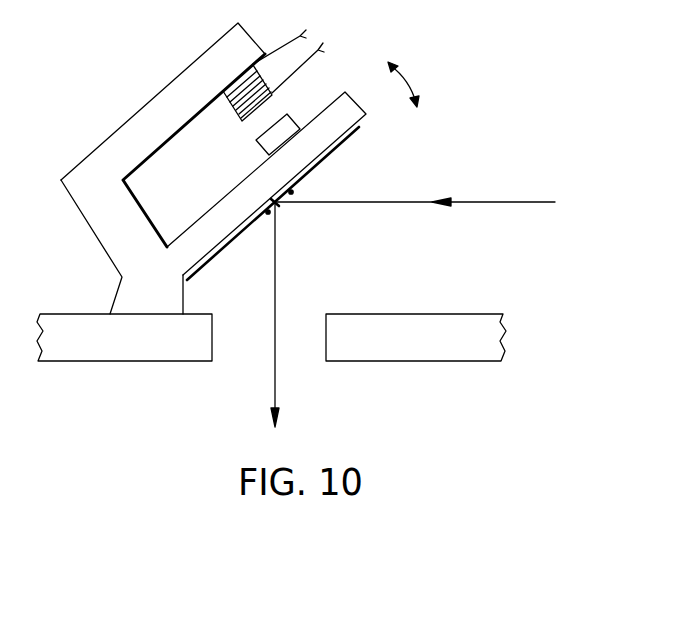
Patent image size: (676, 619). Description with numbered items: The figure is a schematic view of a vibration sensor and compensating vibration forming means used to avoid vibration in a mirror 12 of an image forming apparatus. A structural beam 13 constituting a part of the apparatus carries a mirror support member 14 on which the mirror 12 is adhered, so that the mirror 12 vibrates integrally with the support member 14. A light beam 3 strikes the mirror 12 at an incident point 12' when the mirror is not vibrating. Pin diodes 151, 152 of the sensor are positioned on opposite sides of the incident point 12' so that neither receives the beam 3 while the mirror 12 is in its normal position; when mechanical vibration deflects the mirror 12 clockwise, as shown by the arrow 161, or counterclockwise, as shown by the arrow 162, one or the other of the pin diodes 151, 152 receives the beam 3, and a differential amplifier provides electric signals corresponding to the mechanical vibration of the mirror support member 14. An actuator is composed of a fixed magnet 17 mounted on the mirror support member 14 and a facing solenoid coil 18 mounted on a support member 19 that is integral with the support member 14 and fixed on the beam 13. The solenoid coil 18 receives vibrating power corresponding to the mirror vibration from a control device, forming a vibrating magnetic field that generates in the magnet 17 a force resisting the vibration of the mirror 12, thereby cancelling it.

The support member 19 is at (155, 105).
The solenoid coil 18 is at (232, 100).
The fixed magnet 17 is at (294, 127).
The mirror support member 14 is at (218, 212).
The mirror 12 is at (292, 203).
The incident point 12' is at (295, 223).
The pin diode 151 is at (294, 193).
The pin diode 152 is at (268, 215).
The beam 13 is at (78, 320).
The beam 3 is at (275, 375).
The arrow 161 is at (424, 115).
The arrow 162 is at (388, 72).